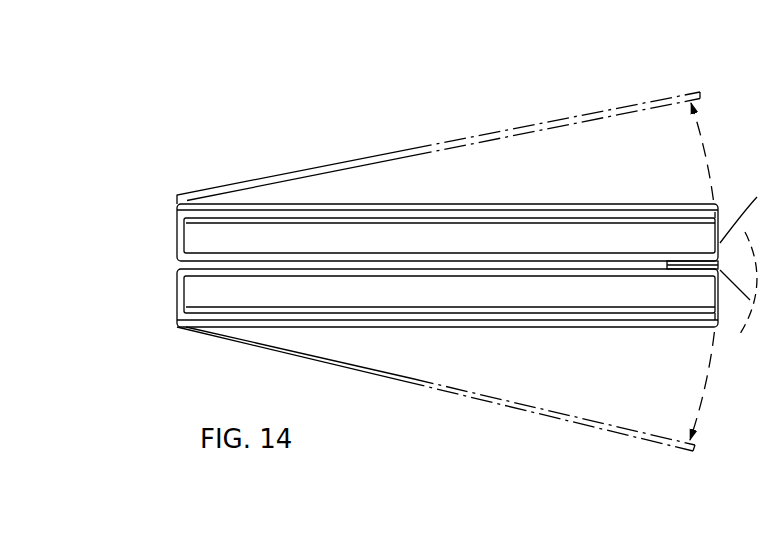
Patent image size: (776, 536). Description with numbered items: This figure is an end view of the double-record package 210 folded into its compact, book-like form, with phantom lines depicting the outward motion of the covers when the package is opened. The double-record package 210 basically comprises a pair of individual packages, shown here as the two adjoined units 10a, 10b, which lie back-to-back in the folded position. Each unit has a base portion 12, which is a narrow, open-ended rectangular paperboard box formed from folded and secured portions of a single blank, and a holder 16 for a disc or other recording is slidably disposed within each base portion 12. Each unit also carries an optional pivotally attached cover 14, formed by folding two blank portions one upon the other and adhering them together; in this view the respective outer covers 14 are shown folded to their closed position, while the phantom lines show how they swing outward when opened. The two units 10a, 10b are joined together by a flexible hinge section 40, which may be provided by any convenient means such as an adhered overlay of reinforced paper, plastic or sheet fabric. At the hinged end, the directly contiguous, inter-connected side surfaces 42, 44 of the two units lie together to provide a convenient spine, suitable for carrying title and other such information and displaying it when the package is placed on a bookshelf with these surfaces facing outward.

The adjoined unit 10a is at (425, 330).
The adjoined unit 10b is at (442, 203).
The base portion 12 is at (299, 220).
The cover 14 is at (623, 205).
The holder 16 is at (449, 265).
The flexible hinge section 40 is at (724, 303).
The side surface 42 is at (736, 232).
The side surface 44 is at (722, 307).
The double-record package 210 is at (425, 146).